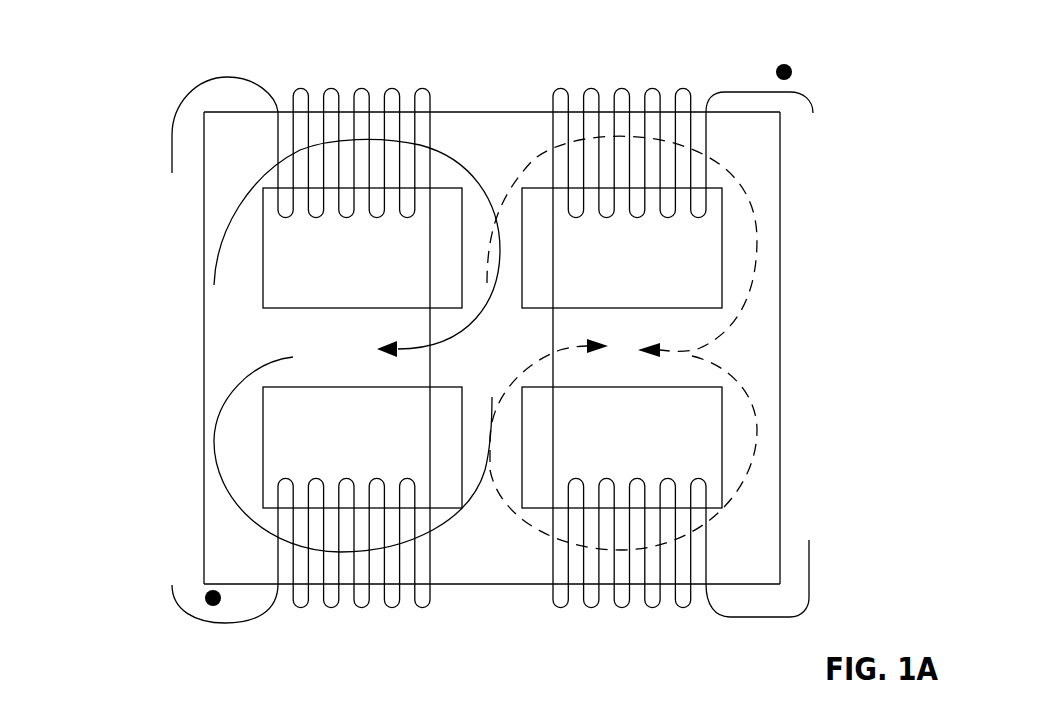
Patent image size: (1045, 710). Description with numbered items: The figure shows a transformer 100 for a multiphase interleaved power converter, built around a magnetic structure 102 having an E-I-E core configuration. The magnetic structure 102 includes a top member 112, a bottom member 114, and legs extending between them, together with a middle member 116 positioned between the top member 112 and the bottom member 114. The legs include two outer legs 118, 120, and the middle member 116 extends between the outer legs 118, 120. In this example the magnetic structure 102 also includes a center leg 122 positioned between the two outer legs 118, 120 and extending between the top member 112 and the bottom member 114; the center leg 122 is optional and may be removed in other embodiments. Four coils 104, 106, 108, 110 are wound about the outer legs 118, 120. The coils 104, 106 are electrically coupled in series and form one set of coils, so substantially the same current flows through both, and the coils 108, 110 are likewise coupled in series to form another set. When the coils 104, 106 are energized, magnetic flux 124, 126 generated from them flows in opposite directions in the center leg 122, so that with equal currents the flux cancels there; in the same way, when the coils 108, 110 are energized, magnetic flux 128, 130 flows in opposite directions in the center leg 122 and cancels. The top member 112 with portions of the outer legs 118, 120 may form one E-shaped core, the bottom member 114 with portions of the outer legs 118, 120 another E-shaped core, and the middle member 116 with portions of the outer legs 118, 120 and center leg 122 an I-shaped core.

The transformer 100 is at (150, 63).
The magnetic structure 102 is at (853, 230).
The coil 104 is at (367, 88).
The coil 106 is at (325, 586).
The coil 108 is at (592, 90).
The coil 110 is at (630, 586).
The top member 112 is at (772, 462).
The bottom member 114 is at (235, 465).
The middle member 116 is at (498, 454).
The outer leg 118 is at (458, 135).
The outer leg 120 is at (475, 557).
The center leg 122 is at (318, 345).
The magnetic flux 124 is at (215, 244).
The magnetic flux 126 is at (213, 389).
The magnetic flux 128 is at (760, 283).
The magnetic flux 130 is at (758, 410).